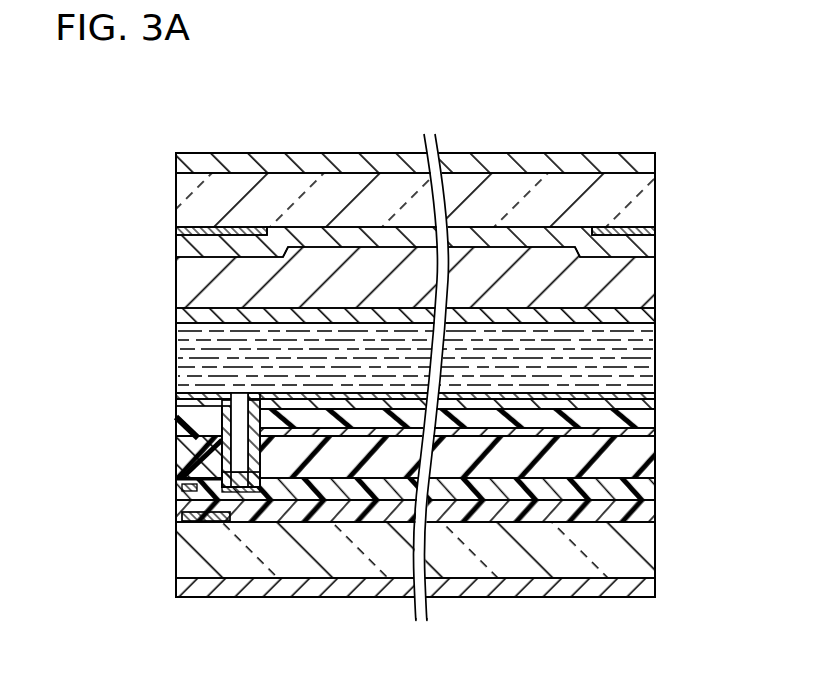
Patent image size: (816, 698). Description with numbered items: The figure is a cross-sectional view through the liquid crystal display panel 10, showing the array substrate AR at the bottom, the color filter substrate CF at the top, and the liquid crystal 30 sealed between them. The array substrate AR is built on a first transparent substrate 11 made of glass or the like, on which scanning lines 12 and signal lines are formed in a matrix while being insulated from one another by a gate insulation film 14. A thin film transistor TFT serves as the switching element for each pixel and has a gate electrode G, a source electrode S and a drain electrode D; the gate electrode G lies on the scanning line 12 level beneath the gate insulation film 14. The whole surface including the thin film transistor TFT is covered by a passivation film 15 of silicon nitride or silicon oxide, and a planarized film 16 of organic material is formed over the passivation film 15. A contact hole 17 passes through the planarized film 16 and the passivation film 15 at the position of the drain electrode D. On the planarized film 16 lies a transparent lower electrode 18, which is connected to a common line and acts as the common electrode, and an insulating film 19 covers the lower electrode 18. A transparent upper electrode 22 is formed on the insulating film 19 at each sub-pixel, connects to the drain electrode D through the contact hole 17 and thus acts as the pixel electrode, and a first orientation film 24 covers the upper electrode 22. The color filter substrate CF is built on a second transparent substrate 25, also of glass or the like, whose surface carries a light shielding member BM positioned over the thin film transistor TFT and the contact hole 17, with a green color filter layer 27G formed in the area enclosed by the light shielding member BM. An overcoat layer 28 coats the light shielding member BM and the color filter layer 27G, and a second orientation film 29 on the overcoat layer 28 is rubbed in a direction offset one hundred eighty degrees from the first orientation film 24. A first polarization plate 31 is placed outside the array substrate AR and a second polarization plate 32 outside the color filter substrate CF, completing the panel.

The liquid crystal display panel 10 is at (140, 82).
The first transparent substrate 11 is at (613, 555).
The scanning line 12 is at (214, 579).
The gate insulation film 14 is at (572, 510).
The passivation film 15 is at (535, 490).
The planarized film 16 is at (180, 458).
The contact hole 17 is at (246, 447).
The lower electrode 18 is at (490, 430).
The insulating film 19 is at (176, 423).
The upper electrode 22 is at (508, 405).
The first orientation film 24 is at (600, 405).
The second transparent substrate 25 is at (538, 197).
The color filter layer 27G is at (297, 238).
The overcoat layer 28 is at (192, 287).
The second orientation film 29 is at (180, 317).
The liquid crystal 30 is at (657, 345).
The first polarization plate 31 is at (320, 590).
The second polarization plate 32 is at (357, 163).
The light shielding member BM is at (217, 222).
The color filter substrate CF is at (660, 153).
The array substrate AR is at (660, 392).
The thin film transistor TFT is at (280, 645).
The source electrode S is at (180, 490).
The gate electrode G is at (203, 521).
The drain electrode D is at (246, 493).